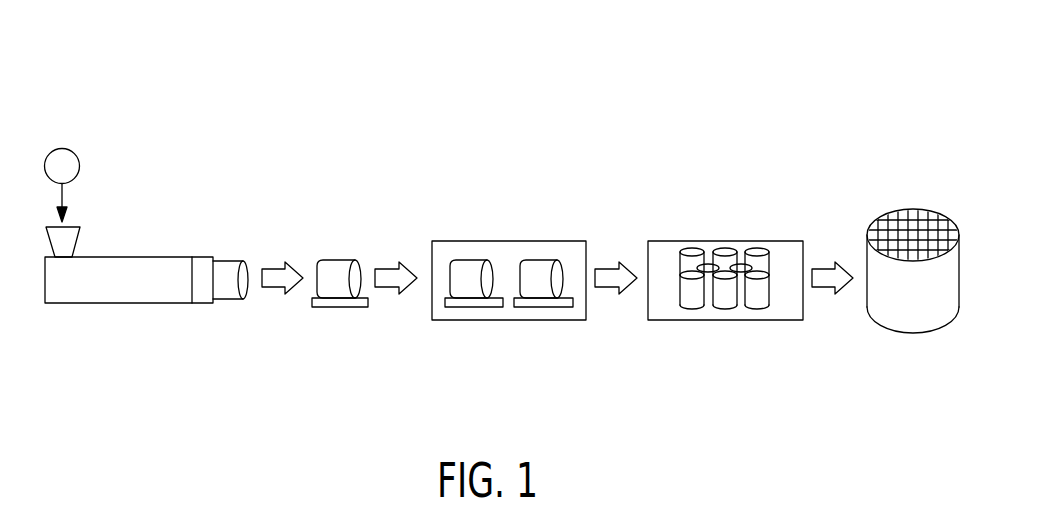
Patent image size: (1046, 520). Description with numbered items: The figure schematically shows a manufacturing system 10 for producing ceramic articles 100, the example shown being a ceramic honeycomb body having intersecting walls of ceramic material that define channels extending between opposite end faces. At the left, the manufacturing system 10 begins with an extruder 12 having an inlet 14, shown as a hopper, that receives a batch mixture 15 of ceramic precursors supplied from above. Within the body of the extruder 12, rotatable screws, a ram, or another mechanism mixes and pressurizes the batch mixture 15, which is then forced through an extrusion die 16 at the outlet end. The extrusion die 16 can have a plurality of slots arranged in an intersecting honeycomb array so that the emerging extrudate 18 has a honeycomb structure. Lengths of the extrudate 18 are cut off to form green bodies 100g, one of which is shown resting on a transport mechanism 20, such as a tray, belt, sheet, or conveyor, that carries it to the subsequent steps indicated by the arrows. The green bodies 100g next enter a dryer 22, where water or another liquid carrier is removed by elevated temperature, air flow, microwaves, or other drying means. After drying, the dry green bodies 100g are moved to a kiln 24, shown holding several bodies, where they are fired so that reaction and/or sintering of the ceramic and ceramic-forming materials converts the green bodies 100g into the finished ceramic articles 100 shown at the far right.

The manufacturing system 10 is at (118, 87).
The extruder 12 is at (98, 327).
The inlet 14 is at (68, 246).
The batch mixture 15 is at (70, 166).
The extrusion die 16 is at (204, 294).
The extrudate 18 is at (228, 271).
The transport mechanism 20 is at (340, 308).
The dryer 22 is at (476, 321).
The kiln 24 is at (672, 314).
The ceramic article 100 is at (892, 233).
The green body 100g is at (338, 271).